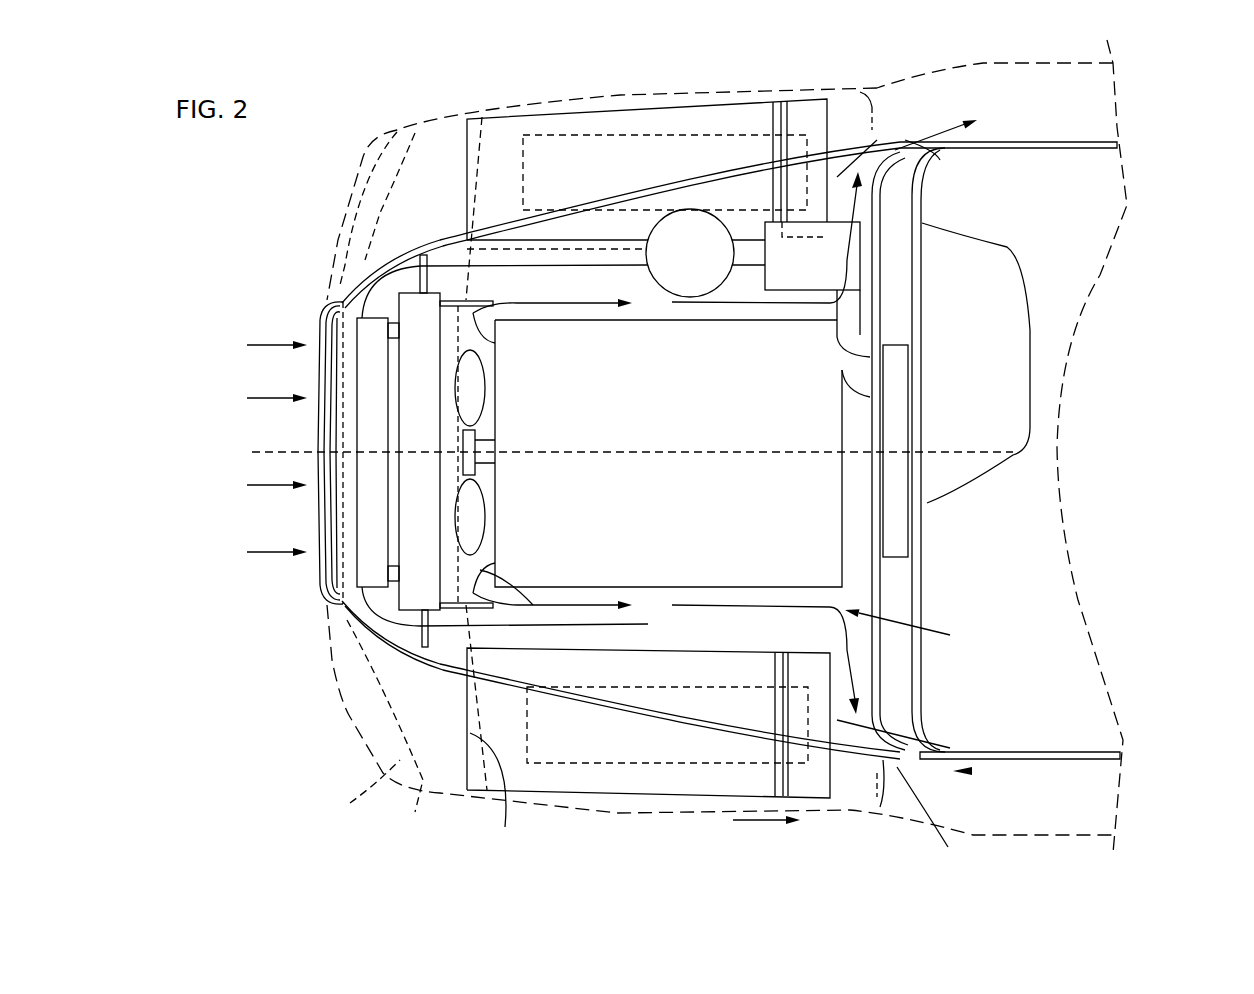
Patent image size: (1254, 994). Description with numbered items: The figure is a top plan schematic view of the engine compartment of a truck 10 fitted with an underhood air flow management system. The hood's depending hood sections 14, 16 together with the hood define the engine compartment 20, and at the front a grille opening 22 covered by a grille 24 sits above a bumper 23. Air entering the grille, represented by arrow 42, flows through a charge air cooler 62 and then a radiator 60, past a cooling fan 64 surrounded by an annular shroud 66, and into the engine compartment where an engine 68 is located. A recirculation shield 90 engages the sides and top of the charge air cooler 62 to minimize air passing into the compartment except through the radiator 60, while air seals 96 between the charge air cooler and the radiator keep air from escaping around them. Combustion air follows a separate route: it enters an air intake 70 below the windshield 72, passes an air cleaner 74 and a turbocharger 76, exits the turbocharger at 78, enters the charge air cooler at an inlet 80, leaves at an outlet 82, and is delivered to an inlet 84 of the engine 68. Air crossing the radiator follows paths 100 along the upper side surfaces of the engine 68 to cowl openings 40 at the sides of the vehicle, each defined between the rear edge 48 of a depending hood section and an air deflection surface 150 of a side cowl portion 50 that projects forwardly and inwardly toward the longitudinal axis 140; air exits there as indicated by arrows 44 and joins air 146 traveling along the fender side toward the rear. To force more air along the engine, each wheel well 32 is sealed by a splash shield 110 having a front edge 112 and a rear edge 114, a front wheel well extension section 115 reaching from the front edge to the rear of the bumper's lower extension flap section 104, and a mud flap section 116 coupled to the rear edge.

The truck 10 is at (1142, 160).
The depending hood section 14 is at (637, 812).
The depending hood section 16 is at (683, 93).
The engine compartment 20 is at (914, 629).
The grille opening 22 is at (314, 431).
The bumper 23 is at (368, 797).
The grille 24 is at (304, 464).
The wheel well 32 is at (691, 789).
The cowl opening 40 is at (893, 147).
The arrow (air entering grille) 42 is at (247, 398).
The arrow (air exiting cowl opening) 44 is at (930, 128).
The rear edge of depending hood section 48 is at (890, 810).
The side cowl portion 50 is at (905, 140).
The radiator 60 is at (405, 441).
The charge air cooler 62 is at (363, 390).
The cooling fan 64 is at (470, 388).
The annular shroud 66 is at (495, 343).
The engine 68 is at (597, 427).
The air intake 70 is at (903, 527).
The windshield 72 is at (960, 389).
The air cleaner 74 is at (785, 279).
The turbocharger 76 is at (673, 259).
The turbocharger air exit 78 is at (600, 242).
The charge air cooler inlet 80 is at (360, 317).
The charge air cooler outlet 82 is at (340, 602).
The engine inlet 84 is at (540, 597).
The recirculation shield 90 is at (423, 272).
The air seals 96 is at (399, 333).
The air flow paths 100 is at (717, 310).
The lower extension flap section 104 is at (437, 157).
The splash shield 110 is at (585, 125).
The front edge of splash shield 112 is at (501, 794).
The rear edge of splash shield 114 is at (787, 780).
The front wheel well extension section 115 is at (467, 168).
The mud flap section 116 is at (798, 117).
The longitudinal axis 140 is at (773, 447).
The arrow (air along fender side) 146 is at (757, 823).
The air deflection surface 150 is at (935, 826).